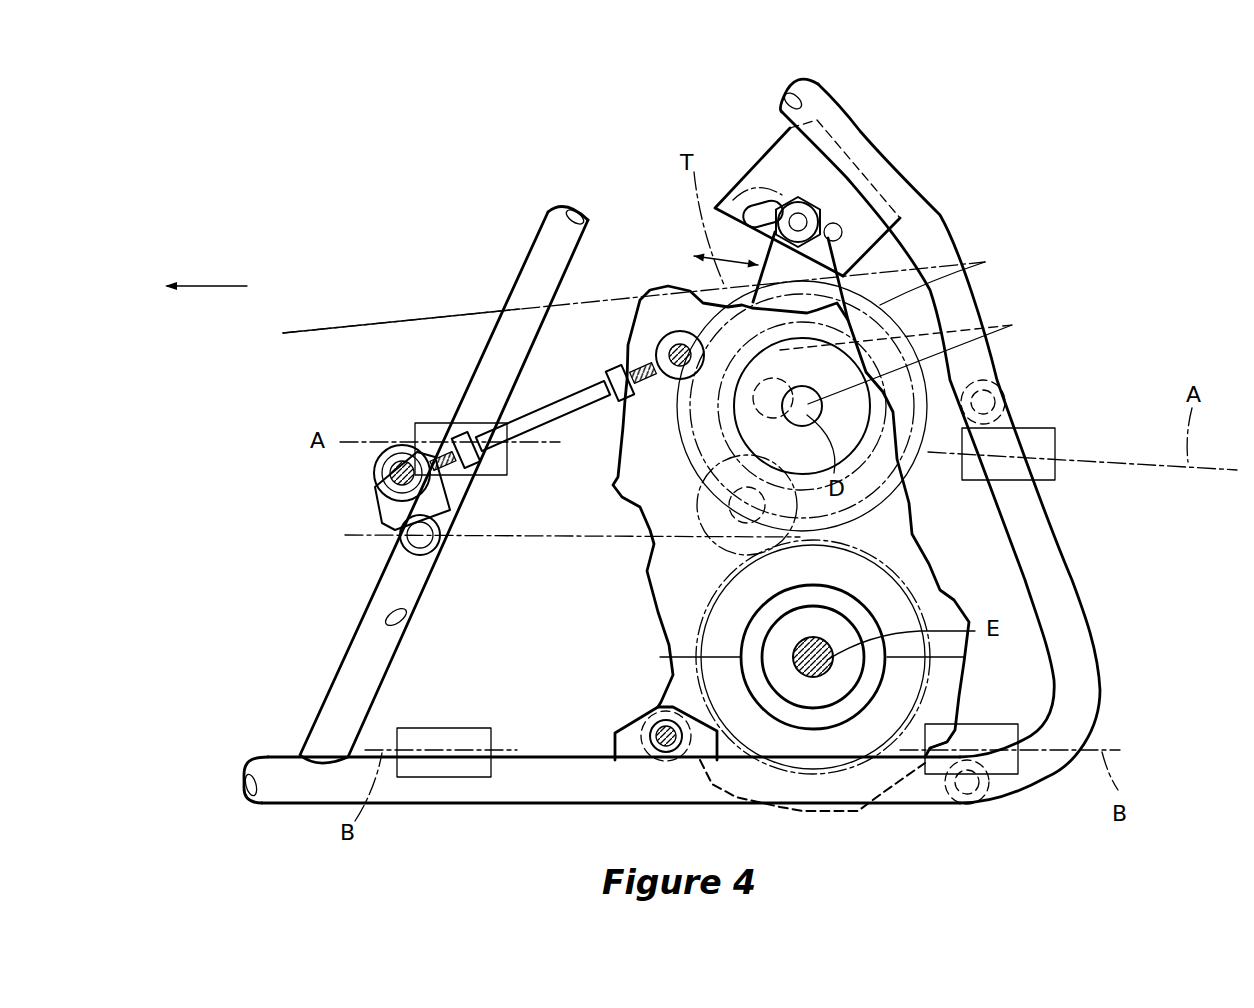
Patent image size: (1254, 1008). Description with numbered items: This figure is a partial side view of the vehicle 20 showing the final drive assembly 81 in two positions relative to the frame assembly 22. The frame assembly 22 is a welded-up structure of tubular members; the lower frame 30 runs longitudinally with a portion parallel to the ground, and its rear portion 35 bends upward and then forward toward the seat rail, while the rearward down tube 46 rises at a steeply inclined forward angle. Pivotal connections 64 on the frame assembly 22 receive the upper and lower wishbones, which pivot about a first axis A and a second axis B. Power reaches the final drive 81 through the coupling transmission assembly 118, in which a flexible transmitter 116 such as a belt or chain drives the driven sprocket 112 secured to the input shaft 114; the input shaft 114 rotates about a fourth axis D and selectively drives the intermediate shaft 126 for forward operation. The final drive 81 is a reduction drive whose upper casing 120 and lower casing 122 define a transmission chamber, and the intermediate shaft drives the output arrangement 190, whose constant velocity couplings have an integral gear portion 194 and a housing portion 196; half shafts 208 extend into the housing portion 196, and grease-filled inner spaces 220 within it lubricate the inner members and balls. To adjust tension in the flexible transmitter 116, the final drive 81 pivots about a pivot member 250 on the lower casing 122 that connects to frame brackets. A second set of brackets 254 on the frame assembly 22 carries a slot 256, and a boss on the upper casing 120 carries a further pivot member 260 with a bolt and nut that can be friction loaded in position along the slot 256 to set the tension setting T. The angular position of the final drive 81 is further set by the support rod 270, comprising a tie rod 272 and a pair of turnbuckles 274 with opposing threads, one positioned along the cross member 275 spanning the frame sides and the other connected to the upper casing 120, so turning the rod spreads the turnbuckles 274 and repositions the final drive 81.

The vehicle 20 is at (512, 214).
The frame assembly 22 is at (1064, 620).
The lower frame 30 is at (271, 769).
The rear portion 35 is at (1080, 590).
The down tube 46 is at (389, 587).
The pivotal connections 64 is at (432, 423).
The final drive assembly 81 is at (557, 598).
The driven sprocket 112 is at (956, 276).
The input shaft 114 is at (921, 359).
The flexible transmitter 116 is at (417, 318).
The coupling transmission assembly 118 is at (373, 320).
The upper casing 120 is at (621, 338).
The lower casing 122 is at (950, 698).
The intermediate shaft 126 is at (730, 493).
The output arrangement 190 is at (745, 625).
The gear portion 194 is at (720, 592).
The housing portion 196 is at (753, 682).
The half shafts 208 is at (817, 670).
The inner spaces 220 is at (813, 607).
The pivot member 250 is at (616, 745).
The brackets 254 is at (803, 150).
The slot 256 is at (767, 208).
The pivot member 260 is at (802, 223).
The support rod 270 is at (543, 400).
The tie rod 272 is at (580, 397).
The turnbuckles 274 is at (697, 366).
The cross member 275 is at (402, 557).